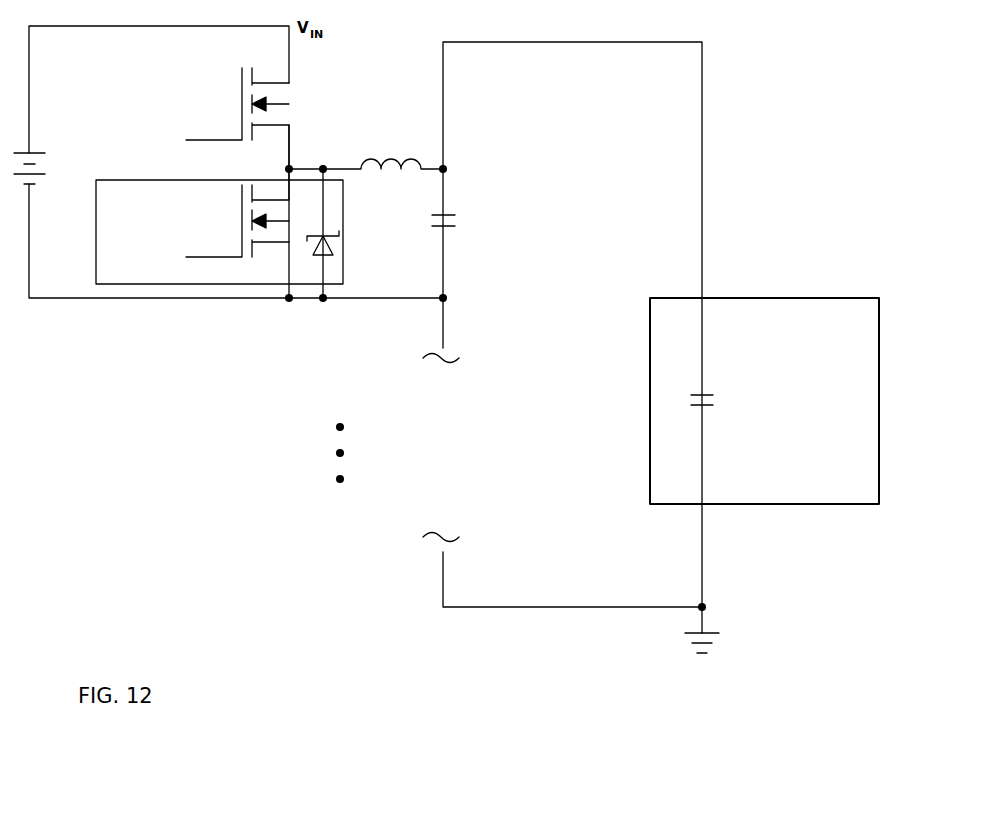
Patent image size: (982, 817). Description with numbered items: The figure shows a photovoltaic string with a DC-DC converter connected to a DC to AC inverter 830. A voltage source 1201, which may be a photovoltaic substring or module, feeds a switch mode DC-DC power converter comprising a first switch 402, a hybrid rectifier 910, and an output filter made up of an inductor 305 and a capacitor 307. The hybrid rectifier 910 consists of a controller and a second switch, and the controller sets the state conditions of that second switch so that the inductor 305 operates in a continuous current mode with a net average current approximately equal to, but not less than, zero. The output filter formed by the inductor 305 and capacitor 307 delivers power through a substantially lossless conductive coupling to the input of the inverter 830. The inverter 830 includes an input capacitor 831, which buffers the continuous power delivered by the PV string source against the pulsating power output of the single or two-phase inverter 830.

The voltage source 1201 is at (42, 164).
The first switch 402 is at (237, 118).
The hybrid rectifier 910 is at (219, 226).
The inductor 305 is at (383, 154).
The capacitor 307 is at (459, 222).
The DC to AC inverter 830 is at (764, 401).
The input capacitor 831 is at (714, 390).